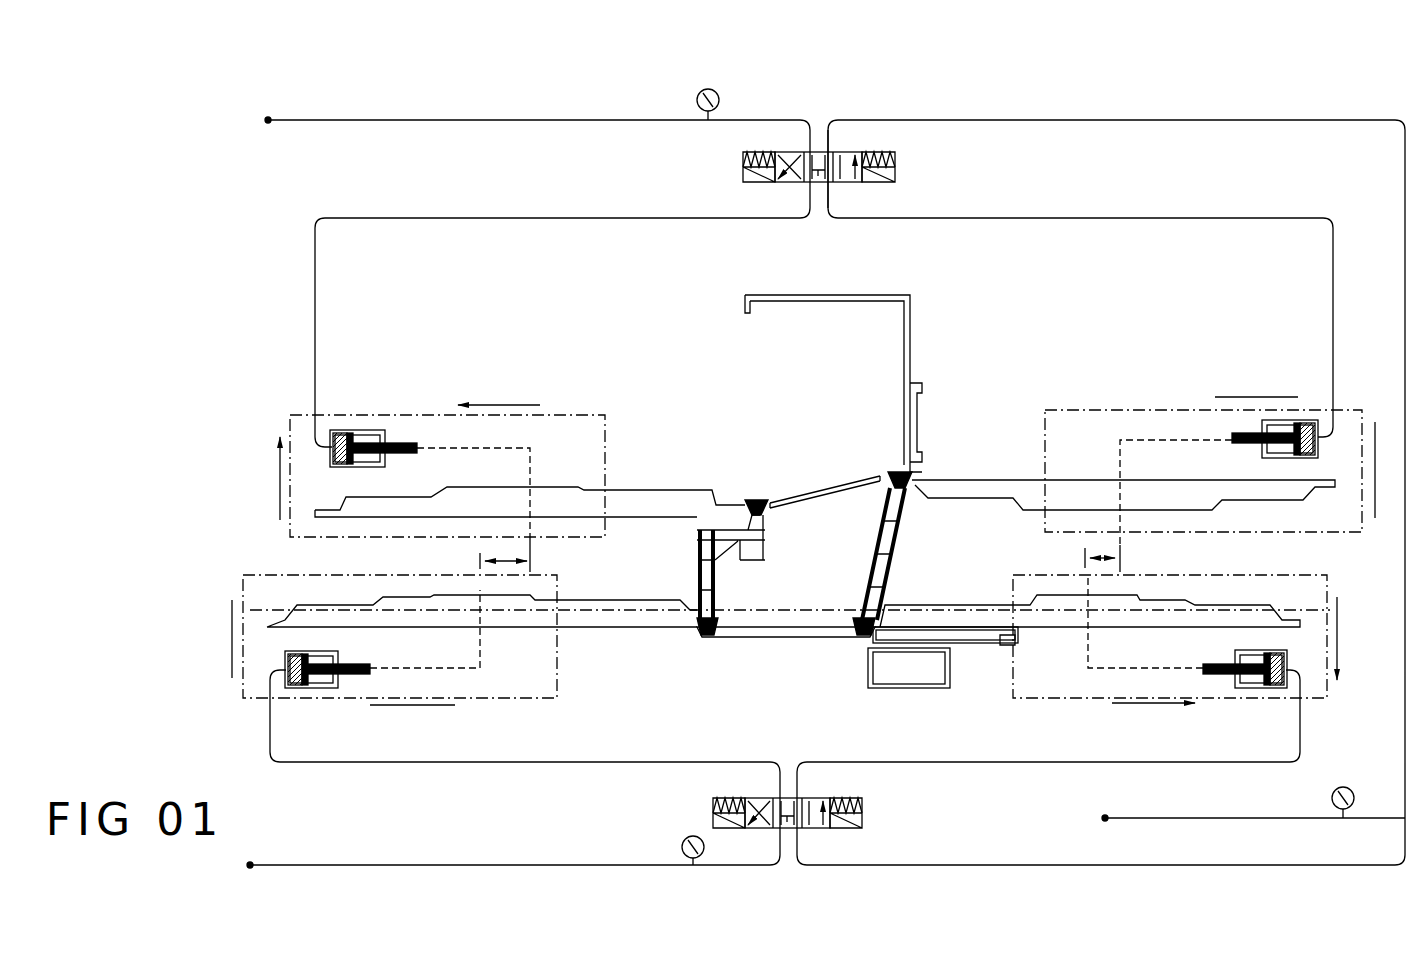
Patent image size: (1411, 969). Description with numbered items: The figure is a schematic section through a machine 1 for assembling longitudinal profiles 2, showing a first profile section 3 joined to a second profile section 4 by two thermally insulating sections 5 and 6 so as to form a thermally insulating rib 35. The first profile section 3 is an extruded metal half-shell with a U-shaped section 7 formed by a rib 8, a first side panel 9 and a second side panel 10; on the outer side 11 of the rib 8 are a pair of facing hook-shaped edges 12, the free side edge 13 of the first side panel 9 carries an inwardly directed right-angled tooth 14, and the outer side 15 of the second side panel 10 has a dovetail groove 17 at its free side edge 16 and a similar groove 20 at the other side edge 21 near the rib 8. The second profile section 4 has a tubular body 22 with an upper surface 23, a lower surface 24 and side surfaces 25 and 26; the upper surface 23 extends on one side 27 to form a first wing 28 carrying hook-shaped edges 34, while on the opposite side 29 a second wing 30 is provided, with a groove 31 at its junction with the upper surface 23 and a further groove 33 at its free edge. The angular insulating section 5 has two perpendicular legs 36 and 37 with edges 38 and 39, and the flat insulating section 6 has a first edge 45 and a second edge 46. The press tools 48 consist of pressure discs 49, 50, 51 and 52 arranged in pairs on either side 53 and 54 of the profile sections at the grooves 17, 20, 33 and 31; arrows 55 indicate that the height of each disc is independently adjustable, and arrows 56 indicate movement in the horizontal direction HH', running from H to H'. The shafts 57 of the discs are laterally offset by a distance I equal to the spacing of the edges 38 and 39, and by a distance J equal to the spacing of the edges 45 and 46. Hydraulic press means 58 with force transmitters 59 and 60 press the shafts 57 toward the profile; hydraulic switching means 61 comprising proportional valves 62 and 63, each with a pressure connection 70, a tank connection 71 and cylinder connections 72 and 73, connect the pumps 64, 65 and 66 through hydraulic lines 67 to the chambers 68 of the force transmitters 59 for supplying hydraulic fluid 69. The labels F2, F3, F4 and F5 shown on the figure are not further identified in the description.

The machine 1 is at (156, 194).
The longitudinal profile 2 is at (688, 324).
The first profile section 3 is at (957, 303).
The second profile section 4 is at (790, 676).
The thermally insulating section 5 is at (681, 554).
The thermally insulating section 6 is at (927, 550).
The U-shaped section 7 is at (964, 338).
The rib 8 is at (905, 352).
The first side panel 9 is at (836, 303).
The second side panel 10 is at (848, 485).
The outer side 11 is at (934, 370).
The hook-shaped edges 12 is at (922, 460).
The free side edge 13 is at (745, 312).
The right-angled tooth 14 is at (750, 305).
The outer side 15 is at (822, 507).
The free side edge 16 is at (724, 463).
The groove 17 is at (755, 490).
The groove 20 is at (877, 460).
The side edge 21 is at (967, 462).
The tubular body 22 is at (868, 688).
The upper surface 23 is at (932, 652).
The lower surface 24 is at (930, 689).
The side surface 25 is at (870, 672).
The side surface 26 is at (950, 655).
The side 27 is at (1042, 638).
The first wing 28 is at (945, 620).
The opposite side 29 is at (683, 636).
The second wing 30 is at (805, 638).
The groove 31 is at (843, 624).
The groove 33 is at (727, 626).
The hook-shaped edges 34 is at (1000, 627).
The thermally insulating rib 35 is at (681, 581).
The leg 36 is at (718, 580).
The leg 37 is at (745, 560).
The edge 38 is at (702, 637).
The edge 39 is at (784, 507).
The first edge 45 is at (912, 486).
The second edge 46 is at (862, 622).
The press tools 48 is at (441, 358).
The pressure disc 49 is at (590, 498).
The pressure disc 50 is at (1062, 490).
The pressure disc 51 is at (538, 620).
The pressure disc 52 is at (1143, 630).
The side 53 is at (588, 333).
The side 54 is at (1100, 328).
The arrows 55 is at (278, 462).
The arrows 56 is at (834, 550).
The shafts 57 is at (530, 500).
The press means 58 is at (226, 450).
The force transmitter 59 is at (357, 466).
The force transmitter 60 is at (376, 448).
The hydraulic switching means 61 is at (686, 163).
The proportional valve 62 is at (775, 181).
The proportional valve 63 is at (757, 829).
The hydraulic pump 64 is at (700, 96).
The hydraulic pump 65 is at (682, 845).
The hydraulic pump 66 is at (1352, 796).
The hydraulic lines 67 is at (505, 122).
The chambers 68 is at (343, 432).
The hydraulic fluid 69 is at (338, 463).
The pressure connection 70 is at (814, 150).
The tank connection 71 is at (836, 148).
The cylinder connection 72 is at (812, 183).
The cylinder connection 73 is at (836, 183).
The force F2 is at (822, 293).
The force F3 is at (950, 690).
The force F4 is at (700, 512).
The force F5 is at (905, 529).
The lateral distance I is at (491, 556).
The lateral distance J is at (1124, 558).
The horizontal direction HH' H is at (257, 592).
The horizontal direction HH' H' is at (1290, 592).